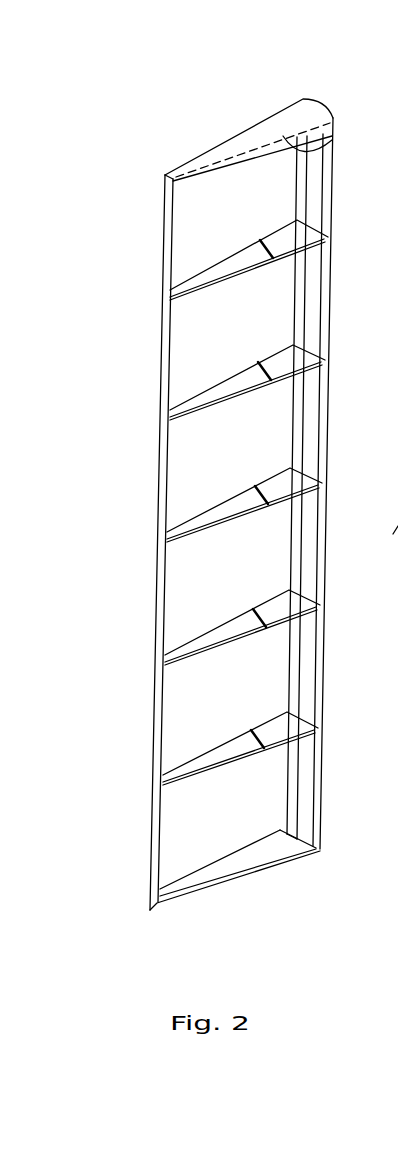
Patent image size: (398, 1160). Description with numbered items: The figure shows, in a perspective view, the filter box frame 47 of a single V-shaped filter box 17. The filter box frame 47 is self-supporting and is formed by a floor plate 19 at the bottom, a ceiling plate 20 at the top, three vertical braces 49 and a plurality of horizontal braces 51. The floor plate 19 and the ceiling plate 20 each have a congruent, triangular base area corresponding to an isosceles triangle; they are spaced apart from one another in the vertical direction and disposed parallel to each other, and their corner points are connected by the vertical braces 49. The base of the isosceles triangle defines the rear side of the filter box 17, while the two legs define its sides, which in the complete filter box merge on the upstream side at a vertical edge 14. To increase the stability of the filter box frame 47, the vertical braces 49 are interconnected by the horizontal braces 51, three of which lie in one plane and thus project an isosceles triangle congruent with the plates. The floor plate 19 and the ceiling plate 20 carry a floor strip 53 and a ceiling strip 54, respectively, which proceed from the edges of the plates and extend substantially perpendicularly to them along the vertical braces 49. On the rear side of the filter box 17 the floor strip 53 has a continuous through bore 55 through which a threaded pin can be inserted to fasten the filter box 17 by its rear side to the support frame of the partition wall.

The filter box 17 is at (158, 72).
The filter box frame 47 is at (223, 480).
The ceiling plate 20 is at (302, 112).
The ceiling strip 54 is at (335, 147).
The vertical brace 49 is at (297, 301).
The horizontal brace 51 is at (235, 397).
The vertical edge 14 is at (160, 695).
The through bore 55 is at (293, 843).
The floor plate 19 is at (273, 855).
The floor strip 53 is at (230, 880).